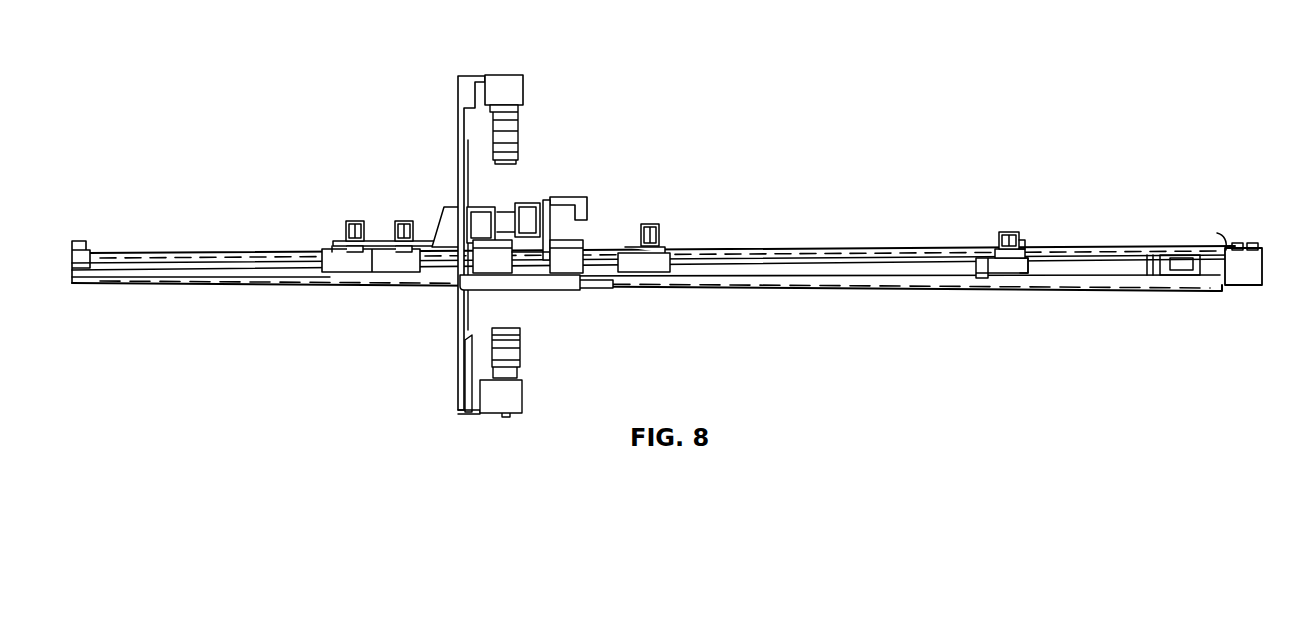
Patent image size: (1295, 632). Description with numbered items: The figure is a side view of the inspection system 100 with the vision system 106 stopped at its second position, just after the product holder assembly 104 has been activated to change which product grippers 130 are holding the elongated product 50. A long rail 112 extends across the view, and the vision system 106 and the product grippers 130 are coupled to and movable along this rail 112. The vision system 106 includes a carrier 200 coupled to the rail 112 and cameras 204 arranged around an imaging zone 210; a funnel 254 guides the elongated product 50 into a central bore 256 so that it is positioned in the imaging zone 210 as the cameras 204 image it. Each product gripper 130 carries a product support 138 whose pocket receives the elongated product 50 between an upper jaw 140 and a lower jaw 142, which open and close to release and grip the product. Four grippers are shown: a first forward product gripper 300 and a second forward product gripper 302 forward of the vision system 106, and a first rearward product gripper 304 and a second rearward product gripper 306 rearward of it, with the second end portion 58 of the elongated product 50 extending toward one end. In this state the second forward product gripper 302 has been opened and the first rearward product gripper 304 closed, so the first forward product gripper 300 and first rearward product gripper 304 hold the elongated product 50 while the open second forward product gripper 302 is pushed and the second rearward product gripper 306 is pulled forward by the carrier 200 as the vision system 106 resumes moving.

The inspection system 100 is at (667, 212).
The elongated product 50 is at (820, 247).
The second end portion 58 is at (378, 231).
The product holder assembly 104 is at (1027, 238).
The vision system 106 is at (542, 100).
The rail 112 is at (1105, 294).
The product gripper 130 is at (337, 278).
The product support 138 is at (988, 266).
The upper jaw 140 is at (1000, 258).
The lower jaw 142 is at (1025, 272).
The carrier 200 is at (592, 263).
The camera 204 is at (507, 92).
The imaging zone 210 is at (522, 228).
The funnel 254 is at (582, 200).
The central bore 256 is at (582, 240).
The first forward product gripper 300 is at (1016, 228).
The second forward product gripper 302 is at (678, 237).
The first rearward product gripper 304 is at (334, 231).
The second rearward product gripper 306 is at (412, 216).